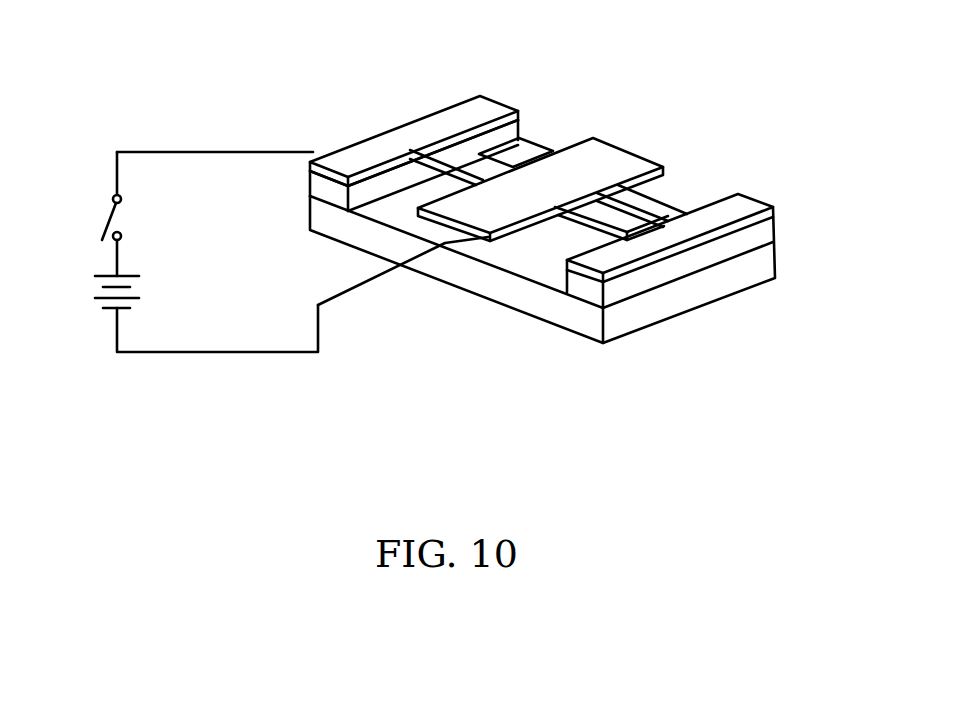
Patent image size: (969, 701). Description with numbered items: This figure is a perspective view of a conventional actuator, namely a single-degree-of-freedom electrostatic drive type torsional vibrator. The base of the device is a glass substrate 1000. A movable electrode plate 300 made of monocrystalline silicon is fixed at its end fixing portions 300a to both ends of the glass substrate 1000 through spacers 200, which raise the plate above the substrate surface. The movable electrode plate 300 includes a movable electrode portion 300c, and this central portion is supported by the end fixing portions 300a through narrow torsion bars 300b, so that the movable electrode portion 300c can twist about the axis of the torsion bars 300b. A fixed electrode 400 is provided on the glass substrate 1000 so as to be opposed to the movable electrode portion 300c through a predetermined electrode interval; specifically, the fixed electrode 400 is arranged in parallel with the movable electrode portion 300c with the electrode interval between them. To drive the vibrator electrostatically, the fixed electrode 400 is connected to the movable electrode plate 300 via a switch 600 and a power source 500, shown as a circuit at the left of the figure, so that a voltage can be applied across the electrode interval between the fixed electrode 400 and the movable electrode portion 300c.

The glass substrate 1000 is at (548, 313).
The spacers 200 is at (317, 192).
The movable electrode plate 300 is at (538, 123).
The end fixing portions 300a is at (483, 113).
The torsion bars 300b is at (473, 160).
The movable electrode portion 300c is at (602, 155).
The fixed electrode 400 is at (492, 250).
The power source 500 is at (102, 302).
The switch 600 is at (115, 207).